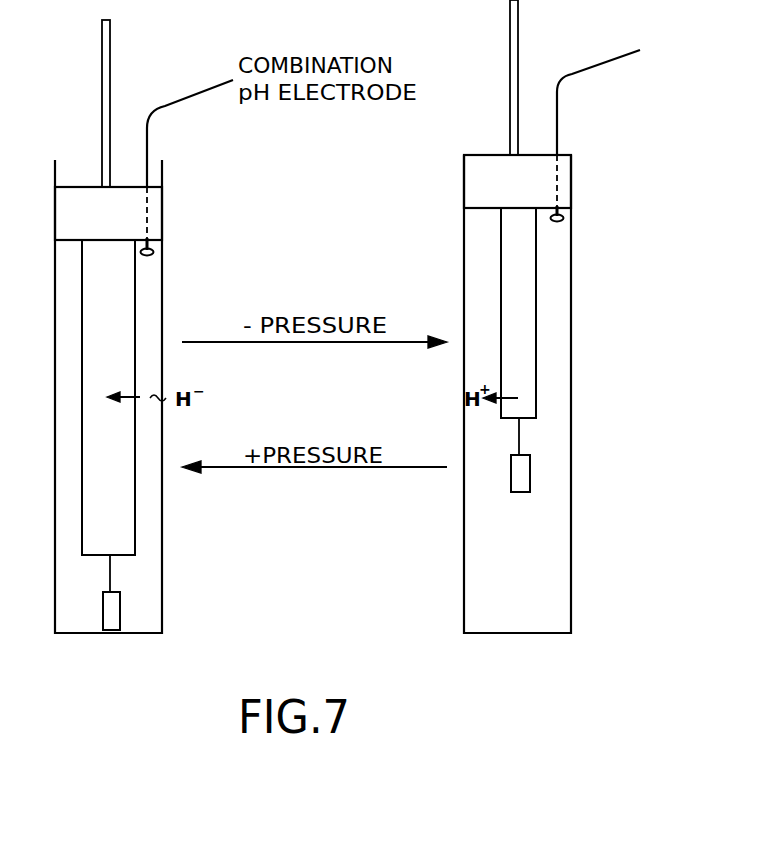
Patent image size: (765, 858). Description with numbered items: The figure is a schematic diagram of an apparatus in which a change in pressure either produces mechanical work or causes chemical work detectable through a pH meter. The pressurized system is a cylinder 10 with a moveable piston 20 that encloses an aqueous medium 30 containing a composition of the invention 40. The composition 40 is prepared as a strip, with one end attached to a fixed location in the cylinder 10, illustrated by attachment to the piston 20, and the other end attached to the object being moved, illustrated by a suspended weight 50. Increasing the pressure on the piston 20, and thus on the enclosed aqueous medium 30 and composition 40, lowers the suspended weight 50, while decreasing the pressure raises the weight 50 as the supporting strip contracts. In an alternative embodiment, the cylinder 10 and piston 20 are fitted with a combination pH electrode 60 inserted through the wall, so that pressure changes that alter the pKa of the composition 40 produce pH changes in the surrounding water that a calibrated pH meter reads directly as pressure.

The cylinder 10 is at (163, 570).
The moveable piston 20 is at (80, 200).
The aqueous medium 30 is at (77, 590).
The composition of the invention 40 is at (118, 308).
The suspended weight 50 is at (122, 615).
The pH electrode 60 is at (153, 252).